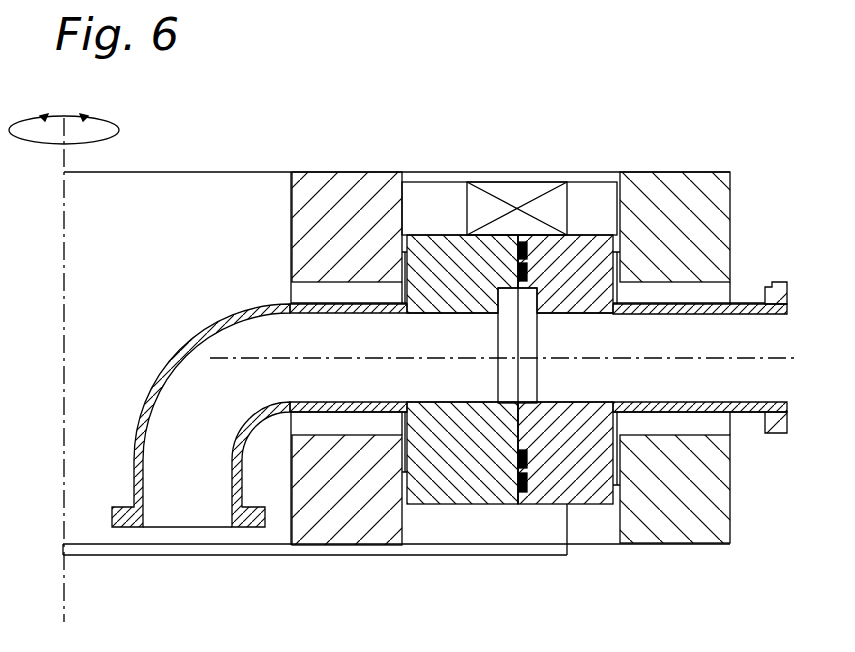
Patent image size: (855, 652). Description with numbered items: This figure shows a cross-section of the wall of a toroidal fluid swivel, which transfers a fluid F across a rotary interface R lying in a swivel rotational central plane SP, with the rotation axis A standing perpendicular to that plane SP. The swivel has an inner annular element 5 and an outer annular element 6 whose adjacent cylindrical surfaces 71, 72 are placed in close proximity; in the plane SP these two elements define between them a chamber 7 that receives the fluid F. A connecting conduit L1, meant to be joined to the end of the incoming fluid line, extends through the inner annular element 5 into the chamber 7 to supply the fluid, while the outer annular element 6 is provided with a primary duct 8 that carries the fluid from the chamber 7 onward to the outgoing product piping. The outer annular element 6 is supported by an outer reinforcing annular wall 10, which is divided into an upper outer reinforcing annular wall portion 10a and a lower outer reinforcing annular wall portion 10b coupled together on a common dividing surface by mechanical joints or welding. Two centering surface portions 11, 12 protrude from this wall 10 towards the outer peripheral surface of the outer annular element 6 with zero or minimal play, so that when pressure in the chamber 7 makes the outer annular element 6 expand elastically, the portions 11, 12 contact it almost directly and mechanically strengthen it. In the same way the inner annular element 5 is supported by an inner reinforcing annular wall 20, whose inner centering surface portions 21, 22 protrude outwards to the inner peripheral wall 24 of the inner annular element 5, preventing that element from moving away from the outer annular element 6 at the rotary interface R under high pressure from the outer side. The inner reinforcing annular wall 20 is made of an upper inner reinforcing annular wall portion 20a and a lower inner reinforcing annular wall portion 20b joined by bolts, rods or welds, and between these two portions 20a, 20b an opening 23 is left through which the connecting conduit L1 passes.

The inner annular element 5 is at (438, 274).
The outer annular element 6 is at (577, 272).
The chamber 7 is at (525, 337).
The adjacent cylindrical surface 71 is at (556, 440).
The adjacent cylindrical surface 72 is at (556, 440).
The primary duct 8 is at (538, 339).
The outer reinforcing annular wall 10 is at (703, 330).
The upper outer reinforcing annular wall portion 10a is at (702, 213).
The lower outer reinforcing annular wall portion 10b is at (686, 486).
The centering surface portion 11 is at (615, 243).
The centering surface portion 12 is at (617, 475).
The inner reinforcing annular wall 20 is at (335, 367).
The upper inner reinforcing annular wall portion 20a is at (317, 222).
The lower inner reinforcing annular wall portion 20b is at (390, 520).
The inner centering surface portion 21 is at (397, 236).
The inner centering surface portion 22 is at (405, 472).
The opening 23 is at (320, 421).
The inner peripheral wall 24 is at (423, 417).
The rotation axis A is at (63, 316).
The fluid F is at (392, 352).
The rotary interface R is at (518, 403).
The swivel rotational central plane SP is at (751, 352).
The connecting conduit L1 is at (151, 409).